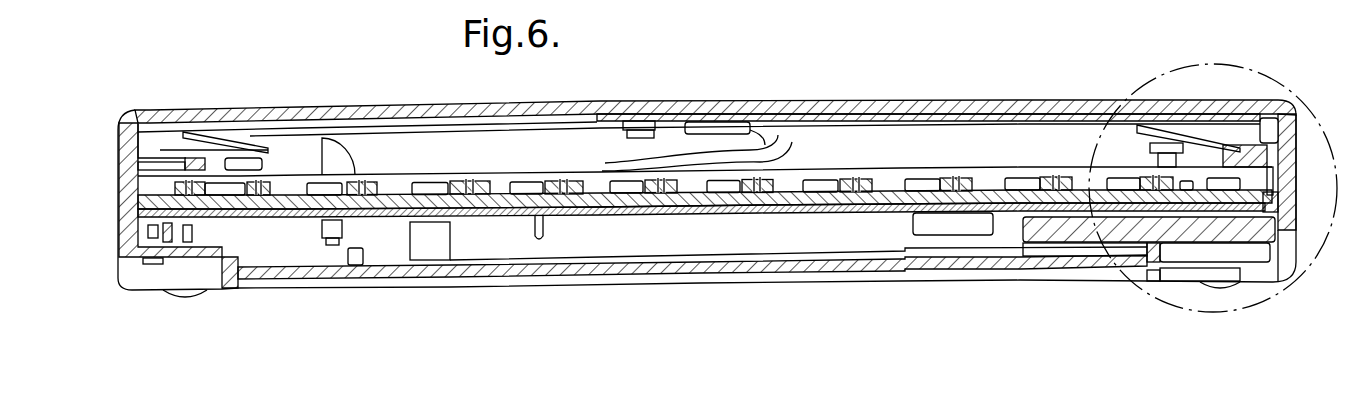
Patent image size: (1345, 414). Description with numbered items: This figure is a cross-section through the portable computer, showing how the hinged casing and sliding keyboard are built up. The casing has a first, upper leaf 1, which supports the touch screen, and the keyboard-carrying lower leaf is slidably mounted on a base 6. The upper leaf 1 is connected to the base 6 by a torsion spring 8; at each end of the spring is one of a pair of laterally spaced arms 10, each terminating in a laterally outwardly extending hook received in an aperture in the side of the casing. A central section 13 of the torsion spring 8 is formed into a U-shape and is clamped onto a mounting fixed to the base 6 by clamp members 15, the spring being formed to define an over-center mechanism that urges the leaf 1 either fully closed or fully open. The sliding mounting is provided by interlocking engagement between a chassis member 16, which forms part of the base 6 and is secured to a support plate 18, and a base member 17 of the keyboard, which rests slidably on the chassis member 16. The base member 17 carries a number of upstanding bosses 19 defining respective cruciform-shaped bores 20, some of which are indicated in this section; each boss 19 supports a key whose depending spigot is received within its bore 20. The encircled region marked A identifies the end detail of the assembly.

The upper leaf 1 is at (438, 98).
The base 6 is at (1067, 265).
The torsion spring 8 is at (603, 106).
The arm 10 is at (233, 140).
The central section 13 is at (725, 105).
The clamp members 15 is at (632, 140).
The chassis member 16 is at (597, 217).
The base member 17 is at (977, 180).
The support plate 18 is at (922, 272).
The bosses 19 is at (300, 132).
The bores 20 is at (277, 192).
The detail portion A is at (1152, 82).